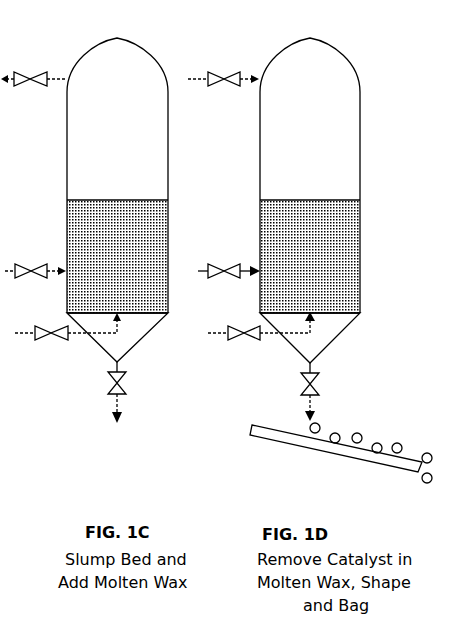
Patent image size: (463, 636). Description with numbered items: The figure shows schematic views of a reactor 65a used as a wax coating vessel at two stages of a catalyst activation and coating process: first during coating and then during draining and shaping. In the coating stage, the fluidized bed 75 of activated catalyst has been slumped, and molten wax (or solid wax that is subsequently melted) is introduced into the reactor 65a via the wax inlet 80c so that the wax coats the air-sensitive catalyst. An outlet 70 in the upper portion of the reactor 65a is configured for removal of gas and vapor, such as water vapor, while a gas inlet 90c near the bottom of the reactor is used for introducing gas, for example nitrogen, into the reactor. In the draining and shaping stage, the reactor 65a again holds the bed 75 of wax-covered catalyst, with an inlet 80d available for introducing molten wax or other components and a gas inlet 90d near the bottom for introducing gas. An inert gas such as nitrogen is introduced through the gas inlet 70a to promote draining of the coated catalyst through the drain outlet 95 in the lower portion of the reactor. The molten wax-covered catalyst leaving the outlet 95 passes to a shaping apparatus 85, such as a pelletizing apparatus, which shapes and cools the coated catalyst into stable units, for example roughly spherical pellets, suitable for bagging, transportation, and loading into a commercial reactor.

In FIG. 1C, the reactor 65a is at (117, 200).
In FIG. 1D, the reactor 65a is at (310, 200).
In FIG. 1C, the outlet 70 is at (37, 74).
In FIG. 1D, the gas inlet 70a is at (222, 77).
In FIG. 1C, the fluidized bed 75 is at (87, 232).
In FIG. 1D, the fluidized bed 75 is at (283, 231).
In FIG. 1C, the wax inlet 80c is at (35, 266).
In FIG. 1D, the inlet 80d is at (229, 265).
In FIG. 1D, the shaping apparatus 85 is at (326, 448).
In FIG. 1C, the gas inlet 90c is at (60, 334).
In FIG. 1D, the gas inlet 90d is at (261, 336).
In FIG. 1C, the outlet 95 is at (133, 401).
In FIG. 1D, the outlet 95 is at (331, 392).